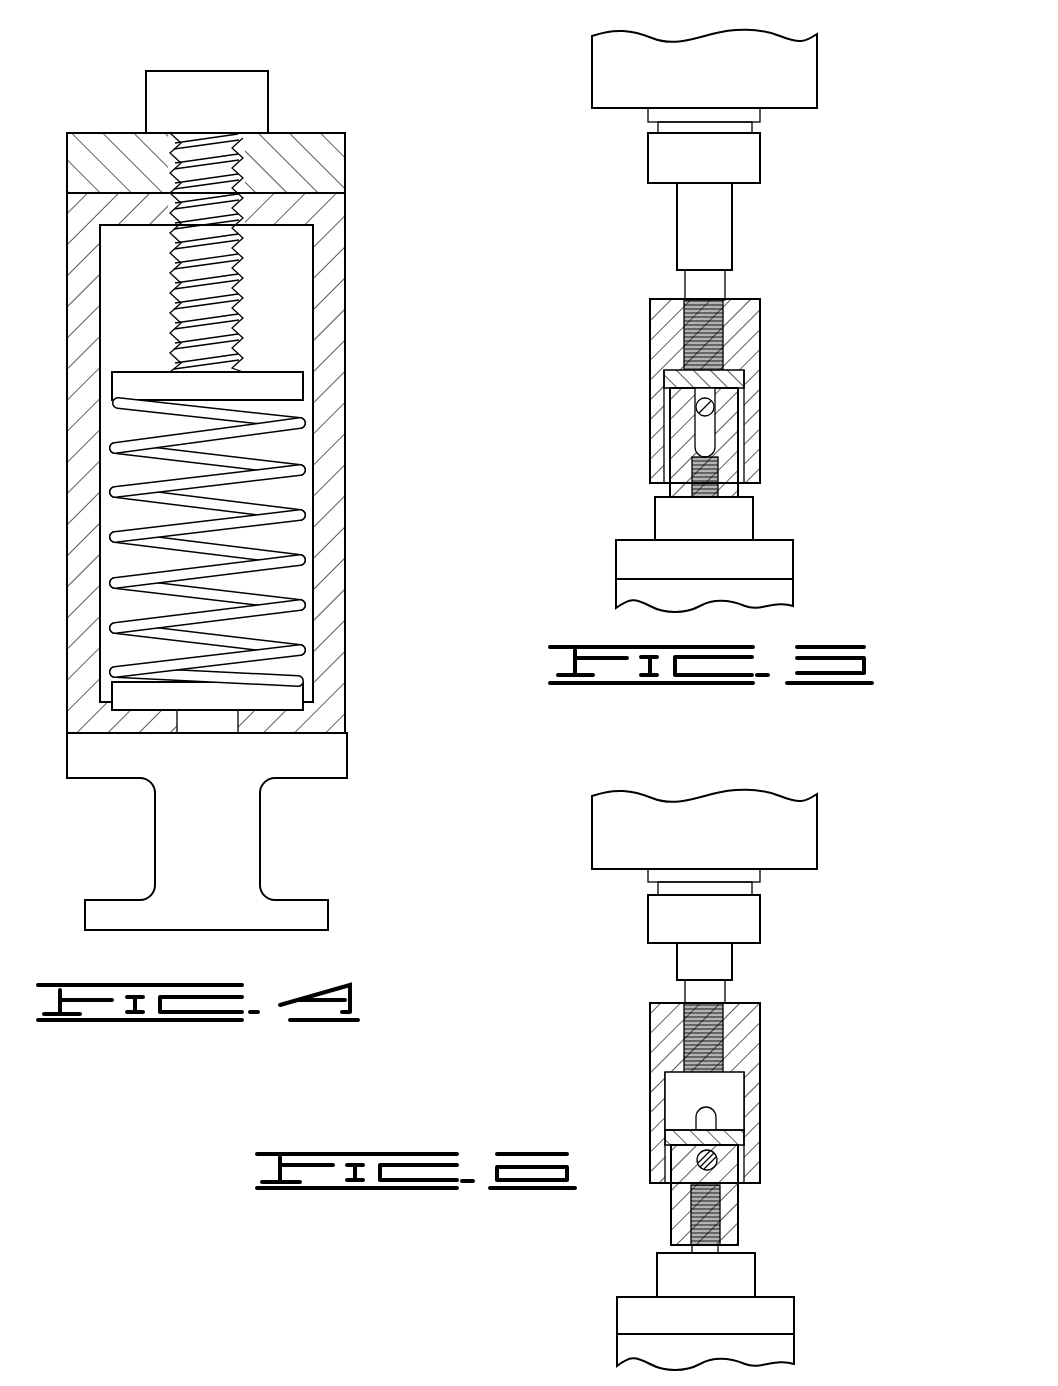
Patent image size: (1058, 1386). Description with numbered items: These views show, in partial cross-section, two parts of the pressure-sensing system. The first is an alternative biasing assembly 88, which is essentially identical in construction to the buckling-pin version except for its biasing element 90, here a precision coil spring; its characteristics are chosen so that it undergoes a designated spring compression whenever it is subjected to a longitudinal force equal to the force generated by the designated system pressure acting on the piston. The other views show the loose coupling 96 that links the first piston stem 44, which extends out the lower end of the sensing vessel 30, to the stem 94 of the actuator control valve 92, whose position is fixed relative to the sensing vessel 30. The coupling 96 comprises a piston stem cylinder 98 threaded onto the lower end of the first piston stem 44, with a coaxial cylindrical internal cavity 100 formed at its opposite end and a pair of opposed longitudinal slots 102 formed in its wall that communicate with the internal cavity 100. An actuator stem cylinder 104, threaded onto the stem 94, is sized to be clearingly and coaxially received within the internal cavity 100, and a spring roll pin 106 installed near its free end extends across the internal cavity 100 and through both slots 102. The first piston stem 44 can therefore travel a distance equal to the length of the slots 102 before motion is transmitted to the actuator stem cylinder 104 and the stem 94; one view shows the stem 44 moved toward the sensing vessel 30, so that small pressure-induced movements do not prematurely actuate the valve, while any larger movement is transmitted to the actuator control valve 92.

In FIG. 5, the sensing vessel 30 is at (817, 70).
In FIG. 6, the sensing vessel 30 is at (817, 832).
In FIG. 5, the first piston stem 44 is at (732, 228).
In FIG. 6, the first piston stem 44 is at (725, 962).
In FIG. 4, the biasing assembly 88 is at (365, 188).
In FIG. 4, the biasing element 90 is at (263, 507).
In FIG. 5, the actuator control valve 92 is at (793, 560).
In FIG. 6, the actuator control valve 92 is at (794, 1313).
In FIG. 5, the stem 94 is at (707, 495).
In FIG. 6, the stem 94 is at (705, 1250).
In FIG. 5, the loose coupling 96 is at (717, 395).
In FIG. 6, the loose coupling 96 is at (706, 1112).
In FIG. 5, the piston stem cylinder 98 is at (652, 310).
In FIG. 6, the piston stem cylinder 98 is at (652, 1012).
In FIG. 5, the internal cavity 100 is at (668, 410).
In FIG. 6, the internal cavity 100 is at (678, 1088).
In FIG. 5, the longitudinal slots 102 is at (705, 432).
In FIG. 6, the longitudinal slots 102 is at (700, 1118).
In FIG. 5, the actuator stem cylinder 104 is at (670, 488).
In FIG. 6, the actuator stem cylinder 104 is at (740, 1216).
In FIG. 5, the spring roll pin 106 is at (712, 408).
In FIG. 6, the spring roll pin 106 is at (714, 1160).